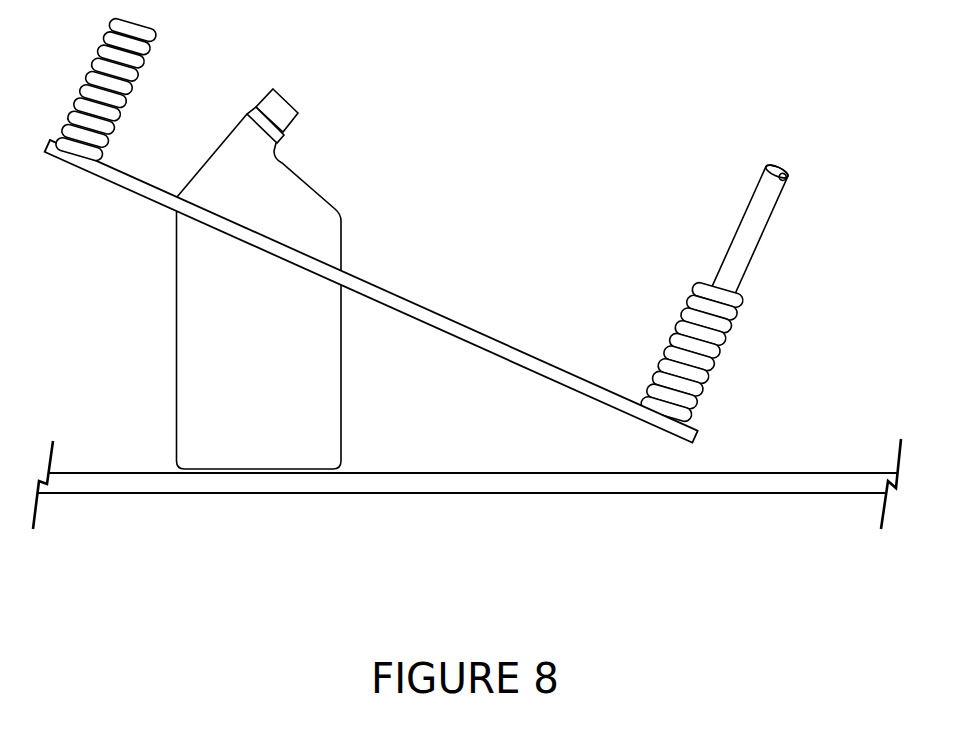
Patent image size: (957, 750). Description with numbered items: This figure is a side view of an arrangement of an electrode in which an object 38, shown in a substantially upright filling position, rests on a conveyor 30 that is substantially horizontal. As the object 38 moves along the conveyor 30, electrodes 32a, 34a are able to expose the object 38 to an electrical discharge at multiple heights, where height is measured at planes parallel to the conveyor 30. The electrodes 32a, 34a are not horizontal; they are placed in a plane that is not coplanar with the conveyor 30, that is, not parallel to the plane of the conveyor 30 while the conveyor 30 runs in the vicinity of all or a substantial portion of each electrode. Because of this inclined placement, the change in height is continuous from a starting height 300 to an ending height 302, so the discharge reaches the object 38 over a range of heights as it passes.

The conveyor 30 is at (94, 486).
The object 38 is at (157, 313).
The electrode 32a is at (740, 190).
The electrode 34a is at (719, 292).
The starting height 300 is at (371, 238).
The ending height 302 is at (587, 410).